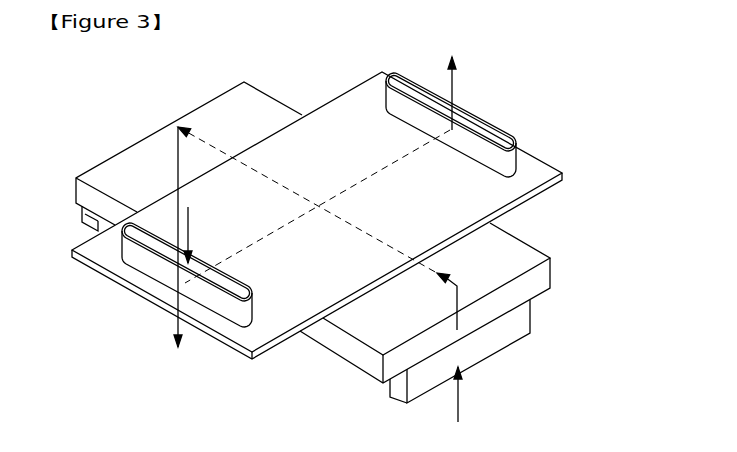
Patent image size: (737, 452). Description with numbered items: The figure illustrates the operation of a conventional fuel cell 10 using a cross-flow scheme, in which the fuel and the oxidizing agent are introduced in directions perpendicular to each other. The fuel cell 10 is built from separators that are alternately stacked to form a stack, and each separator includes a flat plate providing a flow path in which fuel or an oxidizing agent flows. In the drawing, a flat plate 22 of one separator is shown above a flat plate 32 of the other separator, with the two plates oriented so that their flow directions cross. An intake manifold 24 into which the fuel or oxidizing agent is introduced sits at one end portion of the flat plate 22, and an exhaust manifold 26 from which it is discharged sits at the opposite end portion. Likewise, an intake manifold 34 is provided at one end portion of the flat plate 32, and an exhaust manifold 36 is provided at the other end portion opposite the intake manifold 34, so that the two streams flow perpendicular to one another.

The fuel cell 10 is at (585, 138).
The flat plate 22 is at (517, 185).
The intake manifold 24 is at (157, 267).
The exhaust manifold 26 is at (497, 128).
The flat plate 32 is at (543, 278).
The intake manifold 34 is at (492, 347).
The exhaust manifold 36 is at (83, 215).